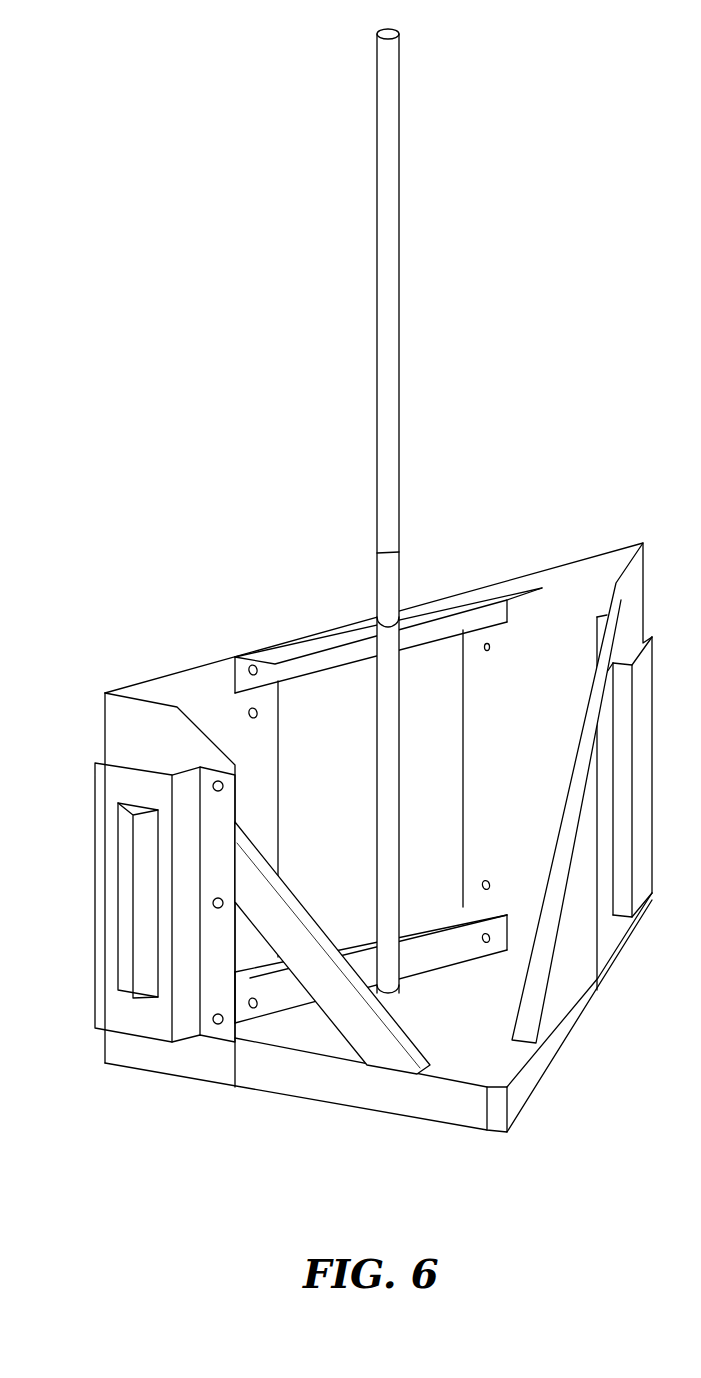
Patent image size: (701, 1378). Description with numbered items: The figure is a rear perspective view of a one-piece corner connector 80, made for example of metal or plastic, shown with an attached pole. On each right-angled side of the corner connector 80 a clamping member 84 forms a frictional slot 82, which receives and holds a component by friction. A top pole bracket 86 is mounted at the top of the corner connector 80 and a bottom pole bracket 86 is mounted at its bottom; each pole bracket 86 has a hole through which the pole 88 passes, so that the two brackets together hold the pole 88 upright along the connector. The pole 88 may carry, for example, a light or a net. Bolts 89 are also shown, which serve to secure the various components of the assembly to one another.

The corner connector 80 is at (583, 580).
The frictional slot 82 is at (115, 731).
The clamping member 84 is at (100, 788).
The pole bracket 86 is at (502, 607).
The pole 88 is at (390, 117).
The bolts 89 is at (491, 646).